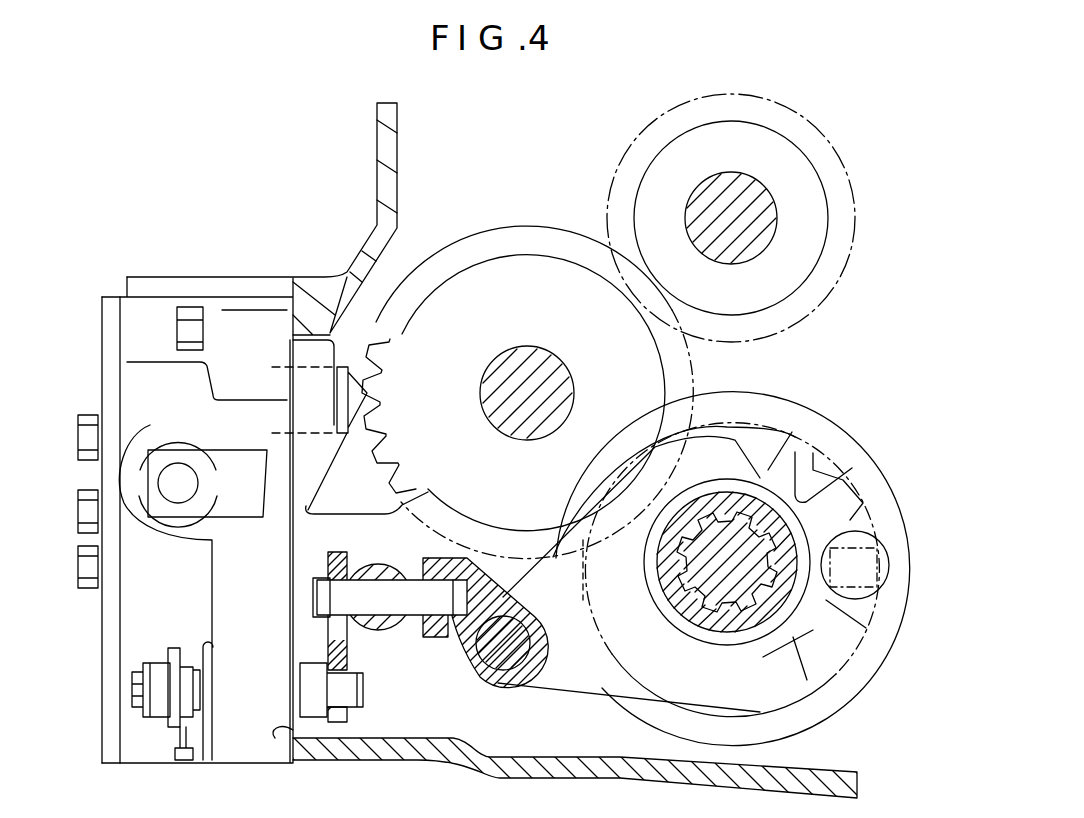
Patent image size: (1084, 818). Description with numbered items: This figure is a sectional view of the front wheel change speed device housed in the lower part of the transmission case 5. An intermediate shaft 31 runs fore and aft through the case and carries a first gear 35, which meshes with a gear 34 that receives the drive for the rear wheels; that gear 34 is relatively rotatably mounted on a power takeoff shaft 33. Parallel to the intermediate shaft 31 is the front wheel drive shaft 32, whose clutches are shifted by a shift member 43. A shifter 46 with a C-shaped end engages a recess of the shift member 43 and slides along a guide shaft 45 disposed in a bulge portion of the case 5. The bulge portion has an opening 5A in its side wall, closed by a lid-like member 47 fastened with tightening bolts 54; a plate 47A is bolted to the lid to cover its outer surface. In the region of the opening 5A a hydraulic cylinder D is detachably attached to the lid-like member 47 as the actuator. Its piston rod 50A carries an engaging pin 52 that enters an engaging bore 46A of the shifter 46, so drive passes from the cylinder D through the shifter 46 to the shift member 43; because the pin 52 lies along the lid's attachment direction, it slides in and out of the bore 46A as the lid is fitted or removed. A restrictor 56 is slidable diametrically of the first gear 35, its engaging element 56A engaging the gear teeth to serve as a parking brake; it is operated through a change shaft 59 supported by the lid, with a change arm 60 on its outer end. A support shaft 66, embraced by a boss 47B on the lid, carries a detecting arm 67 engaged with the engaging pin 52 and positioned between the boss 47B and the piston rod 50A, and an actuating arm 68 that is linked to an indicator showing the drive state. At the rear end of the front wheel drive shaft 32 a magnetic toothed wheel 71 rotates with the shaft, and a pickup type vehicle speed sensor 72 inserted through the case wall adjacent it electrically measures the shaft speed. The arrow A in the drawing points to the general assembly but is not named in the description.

The transmission case 5 is at (370, 760).
The opening 5A is at (293, 730).
The intermediate shaft 31 is at (533, 356).
The front wheel drive shaft 32 is at (672, 601).
The power takeoff shaft 33 is at (690, 212).
The gear 34 is at (640, 137).
The first gear 35 is at (458, 242).
The shift member 43 is at (766, 504).
The guide shaft 45 is at (507, 652).
The shifter 46 is at (725, 443).
The engaging bore 46A is at (447, 628).
The lid-like member 47 is at (257, 278).
The plate 47A is at (102, 300).
The boss 47B is at (308, 688).
The piston rod 50A is at (378, 567).
The engaging pin 52 is at (337, 601).
The tightening bolts 54 is at (187, 310).
The restrictor 56 is at (350, 432).
The engaging element 56A is at (367, 395).
The change shaft 59 is at (178, 463).
The change arm 60 is at (248, 507).
The support shaft 66 is at (140, 668).
The detecting arm 67 is at (337, 655).
The actuating arm 68 is at (177, 648).
The magnetic toothed wheel 71 is at (862, 436).
The vehicle speed sensor 72 is at (873, 675).
The drive assembly A is at (493, 179).
The hydraulic cylinder D is at (417, 698).